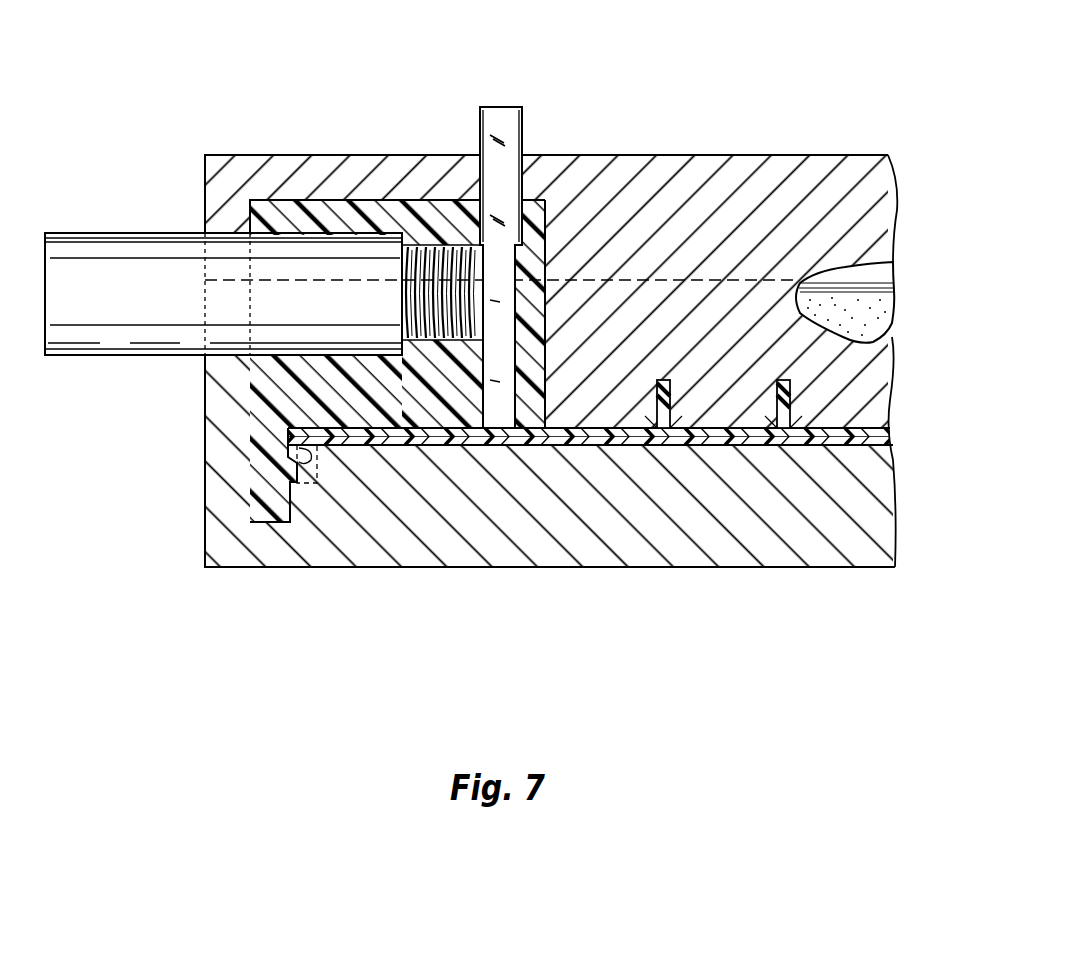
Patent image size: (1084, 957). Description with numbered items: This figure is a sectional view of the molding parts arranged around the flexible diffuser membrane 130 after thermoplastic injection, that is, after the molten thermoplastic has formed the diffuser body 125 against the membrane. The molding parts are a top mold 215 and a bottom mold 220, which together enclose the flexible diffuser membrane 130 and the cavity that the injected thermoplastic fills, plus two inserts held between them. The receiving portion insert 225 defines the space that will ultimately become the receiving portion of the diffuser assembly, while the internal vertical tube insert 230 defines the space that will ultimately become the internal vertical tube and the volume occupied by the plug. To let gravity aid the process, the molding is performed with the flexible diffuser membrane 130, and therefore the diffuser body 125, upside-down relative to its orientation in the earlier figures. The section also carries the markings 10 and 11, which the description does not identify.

The aperture width dimension 10 is at (853, 246).
The spacing dimension 11 is at (823, 253).
The diffuser body 125 is at (877, 427).
The flexible diffuser membrane 130 is at (863, 453).
The top mold 215 is at (322, 155).
The bottom mold 220 is at (330, 570).
The receiving portion insert 225 is at (97, 248).
The internal vertical tube insert 230 is at (500, 115).